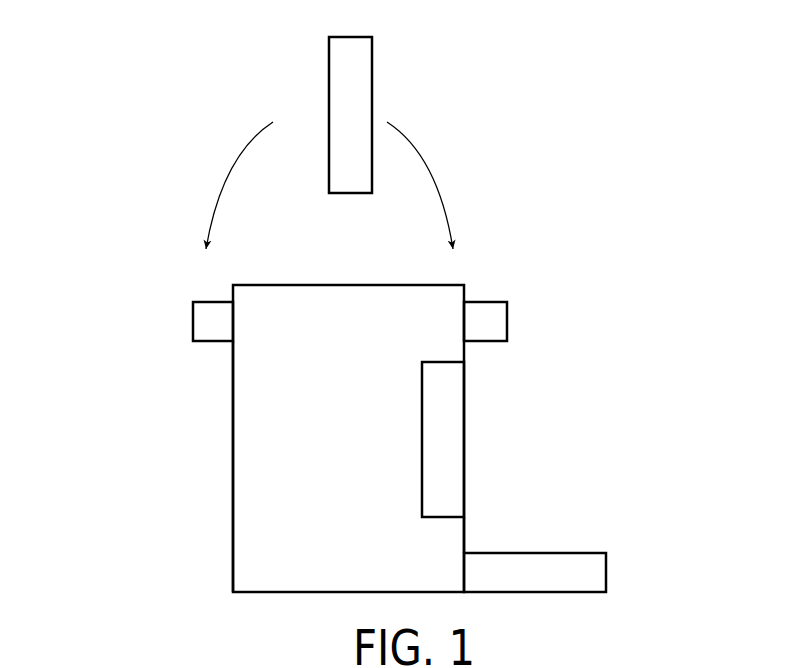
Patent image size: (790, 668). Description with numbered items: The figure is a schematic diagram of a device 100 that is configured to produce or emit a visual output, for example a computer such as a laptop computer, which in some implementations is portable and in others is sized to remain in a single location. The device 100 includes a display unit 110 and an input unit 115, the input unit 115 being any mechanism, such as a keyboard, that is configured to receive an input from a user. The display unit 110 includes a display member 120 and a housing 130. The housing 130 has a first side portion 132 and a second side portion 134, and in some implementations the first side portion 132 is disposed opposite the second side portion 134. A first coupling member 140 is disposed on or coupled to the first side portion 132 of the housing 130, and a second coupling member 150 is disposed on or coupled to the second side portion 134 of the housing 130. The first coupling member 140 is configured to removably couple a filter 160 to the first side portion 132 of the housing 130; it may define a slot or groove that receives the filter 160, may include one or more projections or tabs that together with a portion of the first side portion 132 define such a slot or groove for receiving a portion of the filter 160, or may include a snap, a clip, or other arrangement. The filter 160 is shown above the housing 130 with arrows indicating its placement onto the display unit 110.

The device 100 is at (166, 234).
The display unit 110 is at (207, 479).
The input unit 115 is at (582, 577).
The display member 120 is at (450, 440).
The housing 130 is at (263, 537).
The first side portion 132 is at (467, 537).
The second side portion 134 is at (233, 377).
The first coupling member 140 is at (490, 300).
The second coupling member 150 is at (205, 315).
The filter 160 is at (286, 49).